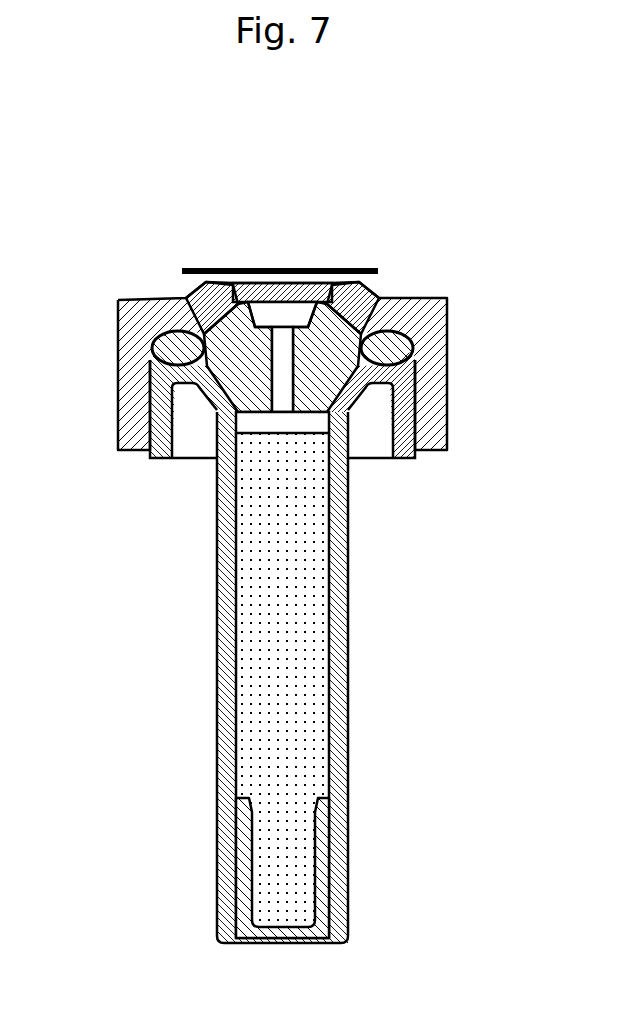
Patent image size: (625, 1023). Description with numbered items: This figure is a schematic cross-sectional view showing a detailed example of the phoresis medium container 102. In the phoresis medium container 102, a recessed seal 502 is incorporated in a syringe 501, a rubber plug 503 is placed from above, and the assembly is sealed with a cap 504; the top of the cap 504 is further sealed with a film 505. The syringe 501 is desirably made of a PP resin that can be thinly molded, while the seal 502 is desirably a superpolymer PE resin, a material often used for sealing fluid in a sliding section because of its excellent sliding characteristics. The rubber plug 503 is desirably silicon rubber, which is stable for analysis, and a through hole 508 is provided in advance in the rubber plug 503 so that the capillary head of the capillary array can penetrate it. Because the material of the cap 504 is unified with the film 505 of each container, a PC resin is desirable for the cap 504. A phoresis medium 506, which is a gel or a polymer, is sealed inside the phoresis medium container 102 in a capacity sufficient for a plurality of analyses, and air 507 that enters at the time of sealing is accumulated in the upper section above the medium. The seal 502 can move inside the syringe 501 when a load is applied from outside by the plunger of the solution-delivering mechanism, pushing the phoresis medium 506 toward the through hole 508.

The phoresis medium container 102 is at (290, 153).
The syringe 501 is at (228, 707).
The seal 502 is at (233, 835).
The rubber plug 503 is at (237, 322).
The cap 504 is at (118, 330).
The film 505 is at (340, 268).
The phoresis medium 506 is at (250, 572).
The air 507 is at (260, 423).
The through hole 508 is at (283, 342).